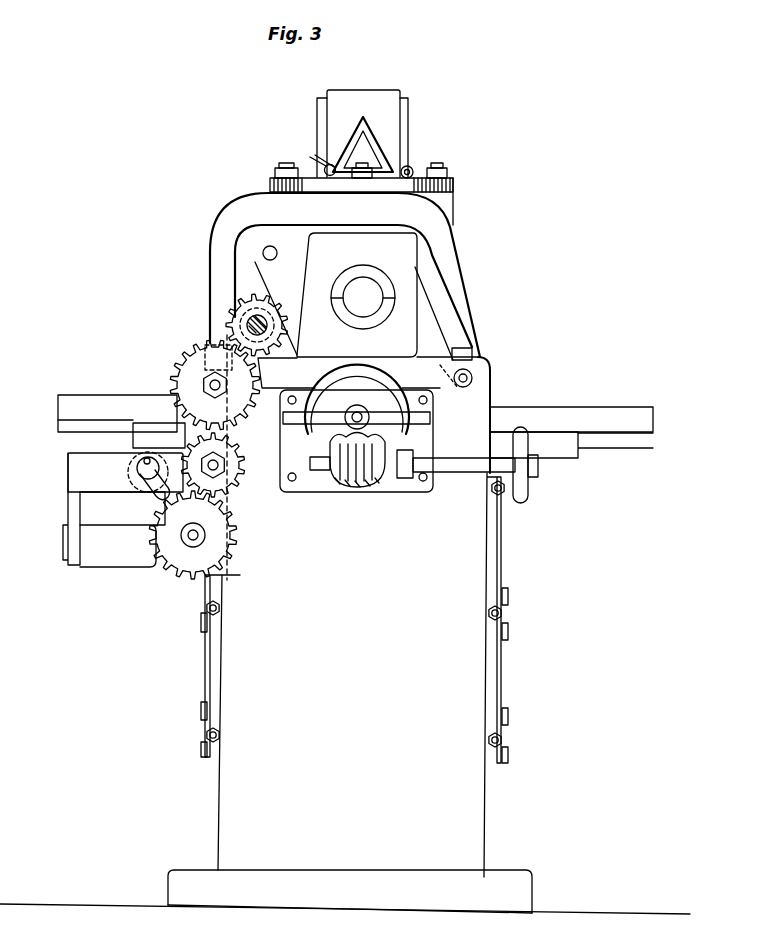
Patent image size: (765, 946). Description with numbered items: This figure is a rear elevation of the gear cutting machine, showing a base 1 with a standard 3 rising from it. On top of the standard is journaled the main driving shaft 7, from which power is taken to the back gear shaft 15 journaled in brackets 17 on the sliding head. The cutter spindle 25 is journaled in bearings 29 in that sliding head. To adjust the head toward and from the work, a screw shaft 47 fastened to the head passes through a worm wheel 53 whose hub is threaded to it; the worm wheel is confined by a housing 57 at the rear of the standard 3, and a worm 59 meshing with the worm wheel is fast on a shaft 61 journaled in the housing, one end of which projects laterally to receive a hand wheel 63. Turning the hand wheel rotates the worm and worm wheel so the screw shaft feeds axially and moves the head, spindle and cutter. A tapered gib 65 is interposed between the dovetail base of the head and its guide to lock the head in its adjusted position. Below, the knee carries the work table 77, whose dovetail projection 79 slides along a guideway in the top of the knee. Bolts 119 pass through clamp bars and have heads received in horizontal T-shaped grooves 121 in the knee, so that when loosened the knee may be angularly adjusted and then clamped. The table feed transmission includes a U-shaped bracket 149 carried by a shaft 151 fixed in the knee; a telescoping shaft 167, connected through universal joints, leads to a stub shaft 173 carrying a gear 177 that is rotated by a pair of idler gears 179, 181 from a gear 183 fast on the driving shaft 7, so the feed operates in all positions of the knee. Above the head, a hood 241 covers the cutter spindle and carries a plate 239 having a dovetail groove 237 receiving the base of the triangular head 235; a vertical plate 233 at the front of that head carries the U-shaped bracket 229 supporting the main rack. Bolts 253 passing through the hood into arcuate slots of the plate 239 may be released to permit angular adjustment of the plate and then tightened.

The base 1 is at (490, 882).
The standard 3 is at (486, 838).
The driving shaft 7 is at (250, 318).
The back gear shaft 15 is at (263, 252).
The brackets 17 is at (255, 265).
The spindle 25 is at (358, 291).
The bearings 29 is at (408, 262).
The screw shaft 47 is at (356, 410).
The worm wheel 53 is at (328, 447).
The housing 57 is at (400, 437).
The worm 59 is at (366, 488).
The shaft 61 is at (450, 472).
The hand wheel 63 is at (529, 490).
The tapered gib 65 is at (482, 360).
The work table 77 is at (653, 418).
The dovetail projection 79 is at (653, 440).
The bolts 119 is at (505, 497).
The T-shaped grooves 121 is at (205, 611).
The U-shaped bracket 149 is at (66, 512).
The shaft 151 is at (118, 558).
The shaft 167 is at (148, 490).
The stub shaft 173 is at (205, 533).
The gear 177 is at (232, 545).
The idler gear 179 is at (240, 485).
The idler gear 181 is at (240, 420).
The gear 183 is at (228, 325).
The U-shaped bracket 229 is at (318, 112).
The vertical plate 233 is at (327, 97).
The triangular head 235 is at (355, 140).
The dovetail groove 237 is at (330, 166).
The plate 239 is at (453, 187).
The hood 241 is at (225, 210).
The bolts 253 is at (286, 171).